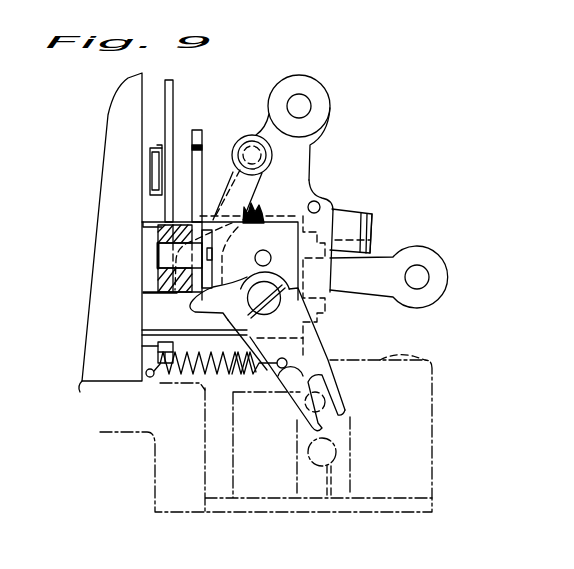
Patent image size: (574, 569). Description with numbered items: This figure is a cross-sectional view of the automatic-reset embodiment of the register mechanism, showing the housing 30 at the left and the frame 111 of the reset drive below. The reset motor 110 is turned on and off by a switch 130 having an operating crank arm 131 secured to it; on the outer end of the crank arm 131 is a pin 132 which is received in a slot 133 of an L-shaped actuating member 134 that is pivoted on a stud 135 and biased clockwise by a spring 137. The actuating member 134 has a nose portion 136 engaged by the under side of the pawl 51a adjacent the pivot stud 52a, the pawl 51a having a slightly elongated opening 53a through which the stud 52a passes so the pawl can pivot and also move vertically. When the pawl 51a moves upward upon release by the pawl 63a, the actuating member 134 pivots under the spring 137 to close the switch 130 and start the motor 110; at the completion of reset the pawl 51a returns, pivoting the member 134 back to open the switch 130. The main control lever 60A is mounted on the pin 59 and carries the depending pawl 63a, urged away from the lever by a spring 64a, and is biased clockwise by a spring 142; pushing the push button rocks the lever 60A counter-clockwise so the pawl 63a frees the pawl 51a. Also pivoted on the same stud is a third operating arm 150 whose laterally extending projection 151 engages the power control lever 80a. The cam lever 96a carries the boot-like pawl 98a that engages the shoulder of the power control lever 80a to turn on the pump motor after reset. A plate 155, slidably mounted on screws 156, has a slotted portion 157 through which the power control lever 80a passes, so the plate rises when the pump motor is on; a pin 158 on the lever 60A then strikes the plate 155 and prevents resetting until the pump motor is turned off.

The housing 30 is at (124, 90).
The cam lever 96a is at (166, 108).
The boot-like pawl 98a is at (160, 166).
The pawl 51a is at (193, 128).
The depending pawl 63a is at (228, 175).
The spring 64a is at (264, 207).
The main control lever 60A is at (276, 89).
The pin 158 is at (318, 200).
The plate 155 is at (332, 198).
The third operating arm 150 is at (340, 208).
The laterally extending projection 151 is at (373, 227).
The screws 156 is at (377, 239).
The slotted portion 157 is at (332, 284).
The power control lever 80a is at (436, 253).
The pin 59 is at (266, 254).
The pivot stud 52a is at (160, 253).
The opening 53a is at (185, 296).
The nose portion 136 is at (193, 305).
The stud 135 is at (223, 322).
The spring 142 is at (158, 352).
The spring 137 is at (165, 382).
The L-shaped actuating member 134 is at (327, 334).
The slot 133 is at (330, 361).
The pin 132 is at (342, 393).
The operating crank arm 131 is at (345, 428).
The switch 130 is at (337, 448).
The motor 110 is at (427, 422).
The frame edge 111 is at (417, 352).